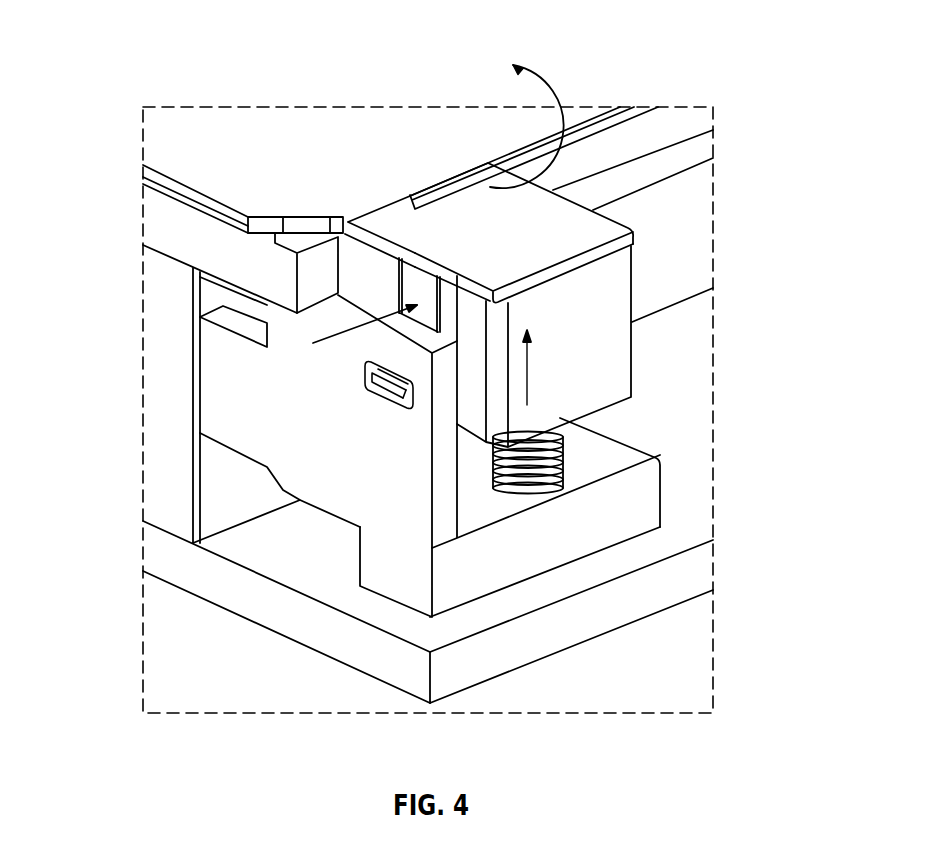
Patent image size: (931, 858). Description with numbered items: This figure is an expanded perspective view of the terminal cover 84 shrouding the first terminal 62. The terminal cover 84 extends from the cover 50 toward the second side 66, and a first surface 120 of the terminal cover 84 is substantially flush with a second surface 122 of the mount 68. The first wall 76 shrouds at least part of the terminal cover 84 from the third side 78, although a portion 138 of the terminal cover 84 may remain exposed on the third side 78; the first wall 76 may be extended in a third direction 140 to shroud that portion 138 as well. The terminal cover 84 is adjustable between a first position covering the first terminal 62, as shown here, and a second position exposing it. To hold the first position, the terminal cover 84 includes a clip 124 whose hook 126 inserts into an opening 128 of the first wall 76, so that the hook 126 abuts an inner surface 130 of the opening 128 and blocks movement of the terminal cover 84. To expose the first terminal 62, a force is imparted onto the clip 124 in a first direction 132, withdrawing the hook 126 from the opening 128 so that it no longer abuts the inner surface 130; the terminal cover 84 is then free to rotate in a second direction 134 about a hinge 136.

The cover 50 is at (452, 133).
The second direction 134 is at (560, 78).
The first wall 76 is at (290, 320).
The portion 138 is at (372, 273).
The clip 124 is at (340, 263).
The terminal cover 84 is at (388, 233).
The hinge 136 is at (408, 191).
The first surface 120 is at (613, 290).
The third direction 140 is at (528, 362).
The first direction 132 is at (313, 343).
The hook 126 is at (386, 400).
The opening 128 is at (380, 388).
The inner surface 130 is at (373, 381).
The first terminal 62 is at (456, 493).
The second surface 122 is at (563, 478).
The mount 68 is at (457, 580).
The second side 66 is at (680, 668).
The third side 78 is at (183, 652).